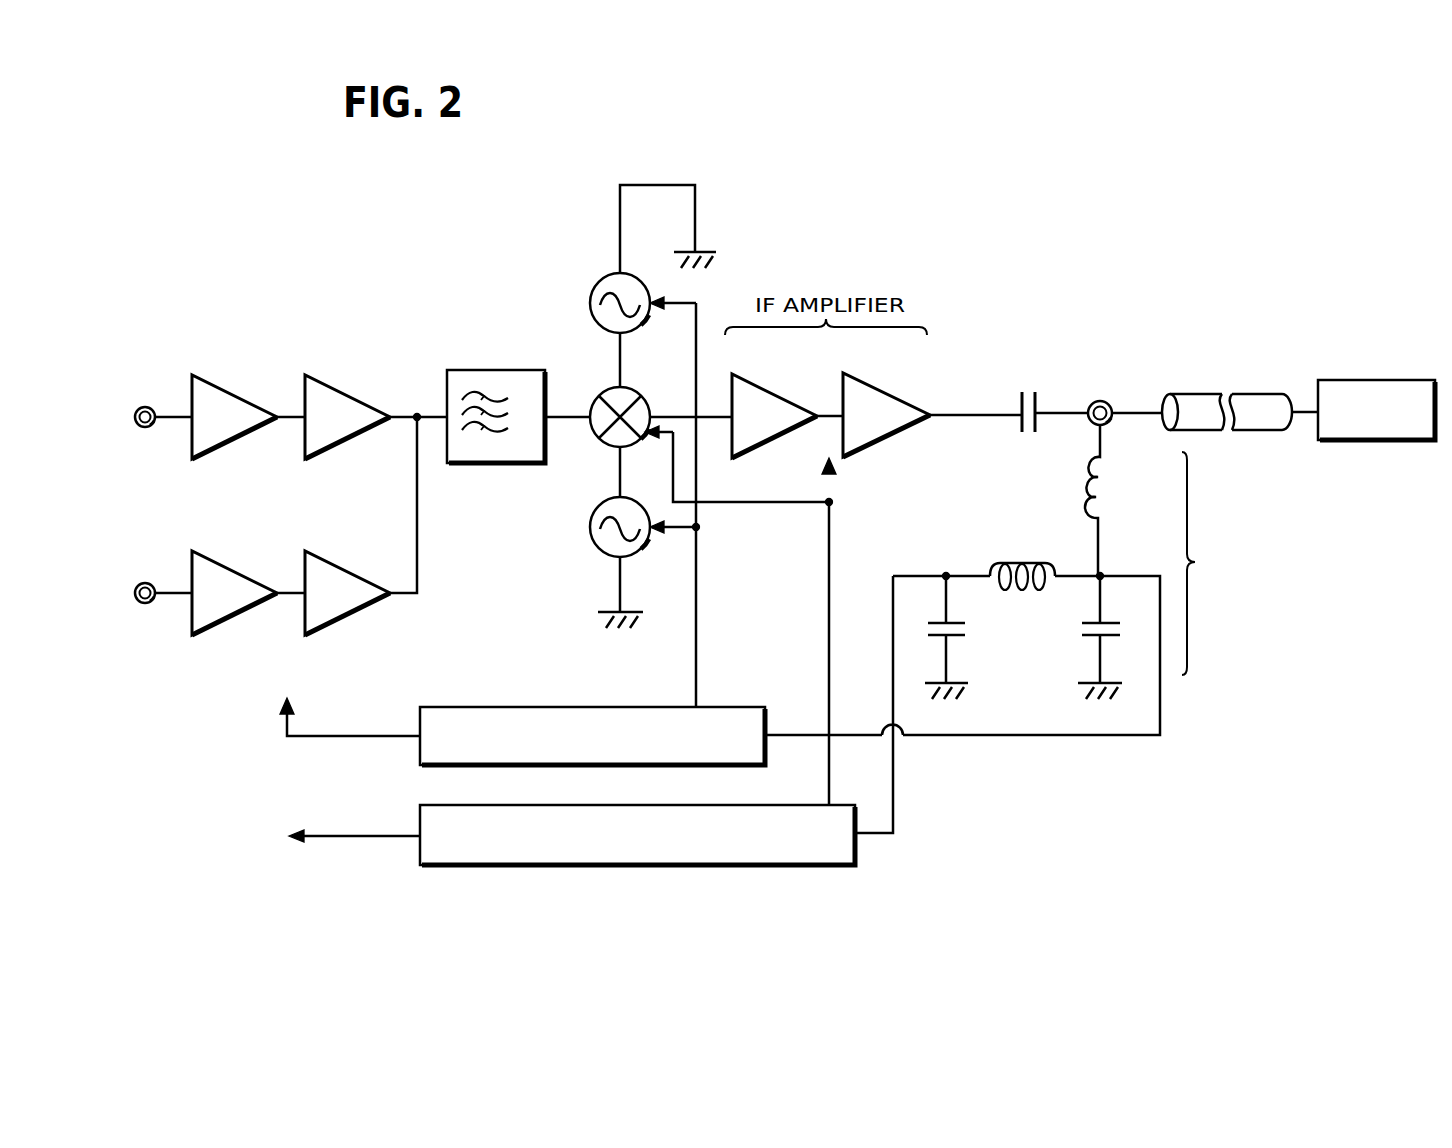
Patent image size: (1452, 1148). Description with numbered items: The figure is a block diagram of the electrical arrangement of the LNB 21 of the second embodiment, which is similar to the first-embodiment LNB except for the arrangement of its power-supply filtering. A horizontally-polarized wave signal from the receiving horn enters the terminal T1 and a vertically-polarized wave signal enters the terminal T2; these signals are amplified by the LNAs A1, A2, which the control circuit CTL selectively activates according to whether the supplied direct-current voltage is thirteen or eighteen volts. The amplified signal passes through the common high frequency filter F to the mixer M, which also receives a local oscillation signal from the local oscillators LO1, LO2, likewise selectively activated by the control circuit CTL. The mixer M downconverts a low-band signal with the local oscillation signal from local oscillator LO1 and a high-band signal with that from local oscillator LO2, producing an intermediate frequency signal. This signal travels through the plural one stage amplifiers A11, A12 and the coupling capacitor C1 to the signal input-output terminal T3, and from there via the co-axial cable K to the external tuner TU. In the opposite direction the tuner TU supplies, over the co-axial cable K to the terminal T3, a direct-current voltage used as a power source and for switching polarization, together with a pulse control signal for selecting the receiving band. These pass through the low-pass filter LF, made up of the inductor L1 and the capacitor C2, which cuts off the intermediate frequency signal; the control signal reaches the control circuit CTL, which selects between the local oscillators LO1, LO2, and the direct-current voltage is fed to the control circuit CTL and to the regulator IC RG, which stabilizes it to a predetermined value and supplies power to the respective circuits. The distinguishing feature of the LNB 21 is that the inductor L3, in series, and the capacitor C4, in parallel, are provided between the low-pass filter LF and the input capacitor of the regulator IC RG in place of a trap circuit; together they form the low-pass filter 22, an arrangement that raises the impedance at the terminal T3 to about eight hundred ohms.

The LNB 21 is at (258, 191).
The terminal T1 is at (145, 406).
The terminal T2 is at (145, 606).
The LNA A1 is at (387, 366).
The LNA A2 is at (387, 640).
The high frequency filter F is at (494, 370).
The local oscillator LO1 is at (600, 282).
The local oscillator LO2 is at (589, 527).
The mixer M is at (600, 396).
The one stage amplifier A11 is at (792, 395).
The one stage amplifier A12 is at (904, 395).
The coupling capacitor C1 is at (1019, 400).
The signal input-output terminal T3 is at (1099, 400).
The co-axial cable K is at (1255, 394).
The tuner TU is at (1376, 380).
The inductor L1 is at (1114, 456).
The low-pass filter LF is at (1202, 563).
The low-pass filter 22 is at (967, 558).
The inductor L3 is at (1015, 562).
The capacitor C4 is at (948, 636).
The capacitor C2 is at (1103, 636).
The control circuit CTL is at (480, 707).
The regulator IC RG is at (490, 866).